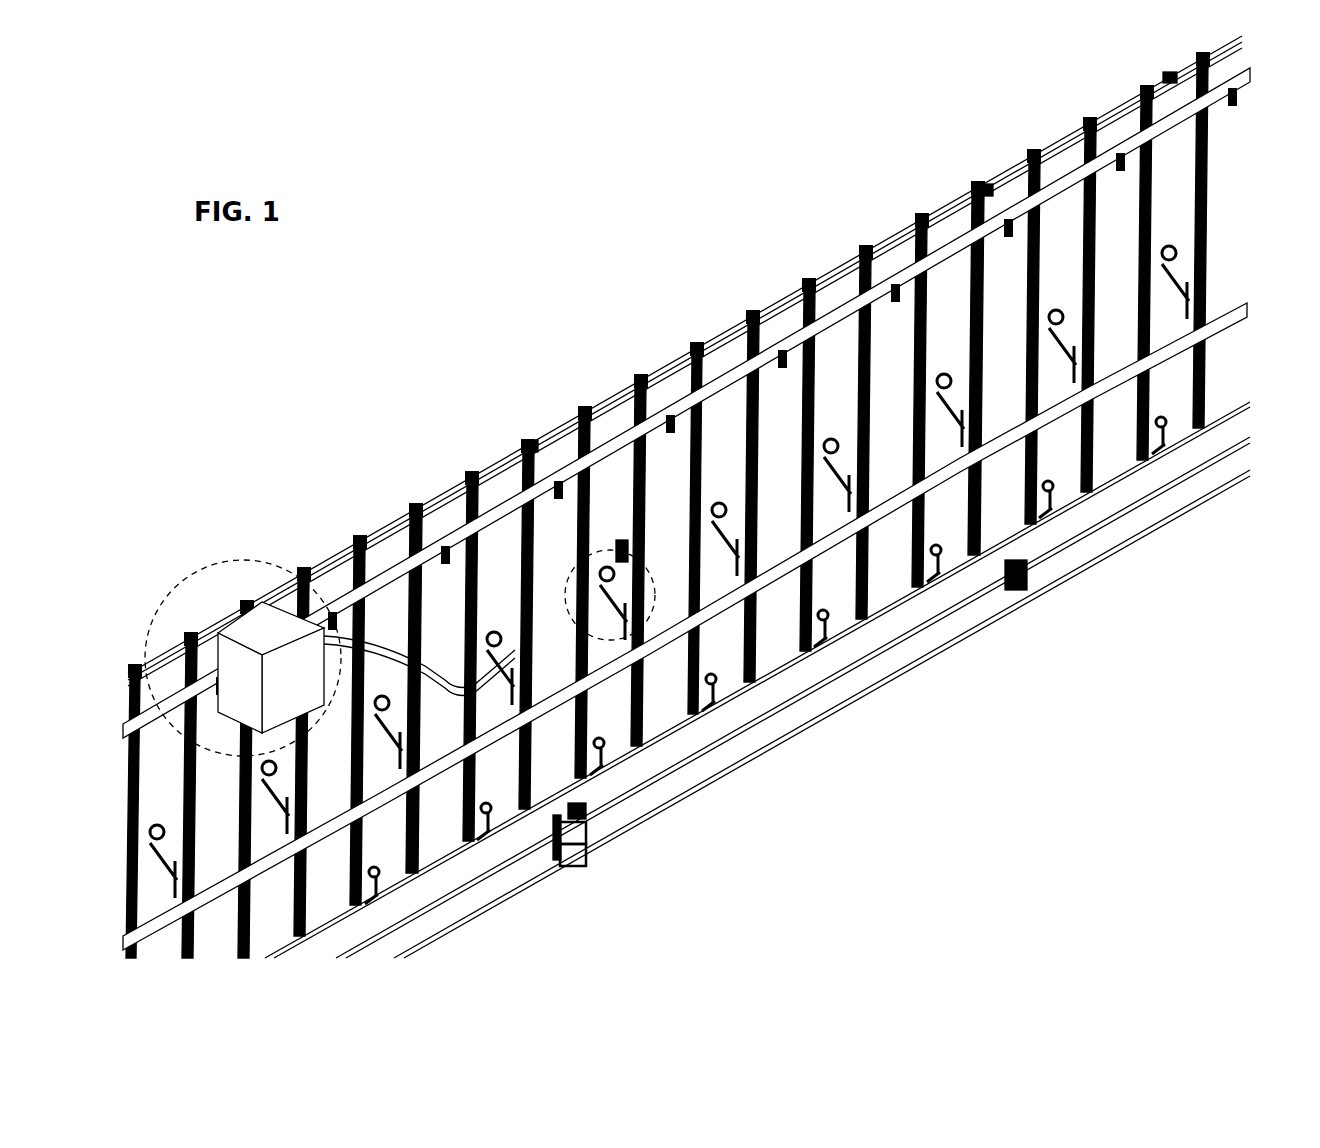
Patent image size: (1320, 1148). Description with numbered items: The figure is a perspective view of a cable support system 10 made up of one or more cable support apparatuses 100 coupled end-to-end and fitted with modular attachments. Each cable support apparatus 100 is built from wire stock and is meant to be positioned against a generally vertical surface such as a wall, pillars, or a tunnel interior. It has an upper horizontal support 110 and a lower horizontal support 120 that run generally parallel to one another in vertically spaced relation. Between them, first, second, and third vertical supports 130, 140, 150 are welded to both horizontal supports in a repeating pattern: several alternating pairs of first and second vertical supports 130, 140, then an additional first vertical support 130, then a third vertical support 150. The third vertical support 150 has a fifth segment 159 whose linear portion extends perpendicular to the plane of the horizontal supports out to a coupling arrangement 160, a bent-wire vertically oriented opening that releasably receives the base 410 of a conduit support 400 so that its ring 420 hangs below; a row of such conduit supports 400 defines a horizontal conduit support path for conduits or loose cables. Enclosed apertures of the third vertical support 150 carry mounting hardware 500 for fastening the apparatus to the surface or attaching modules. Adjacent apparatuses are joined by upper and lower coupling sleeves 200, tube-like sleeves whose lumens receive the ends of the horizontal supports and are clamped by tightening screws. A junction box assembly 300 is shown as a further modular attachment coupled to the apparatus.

The cable support system 10 is at (507, 258).
The cable support apparatus 100 is at (397, 460).
The upper horizontal support 110 is at (888, 245).
The lower horizontal support 120 is at (778, 660).
The first vertical support 130 is at (702, 467).
The second vertical support 140 is at (636, 505).
The third vertical support 150 is at (523, 562).
The fifth segment 159 is at (550, 810).
The coupling arrangement 160 is at (590, 813).
The coupling sleeve 200 is at (1157, 68).
The junction box assembly 300 is at (237, 600).
The conduit support 400 is at (1036, 622).
The base 410 is at (595, 818).
The ring 420 is at (583, 843).
The mounting hardware 500 is at (984, 192).